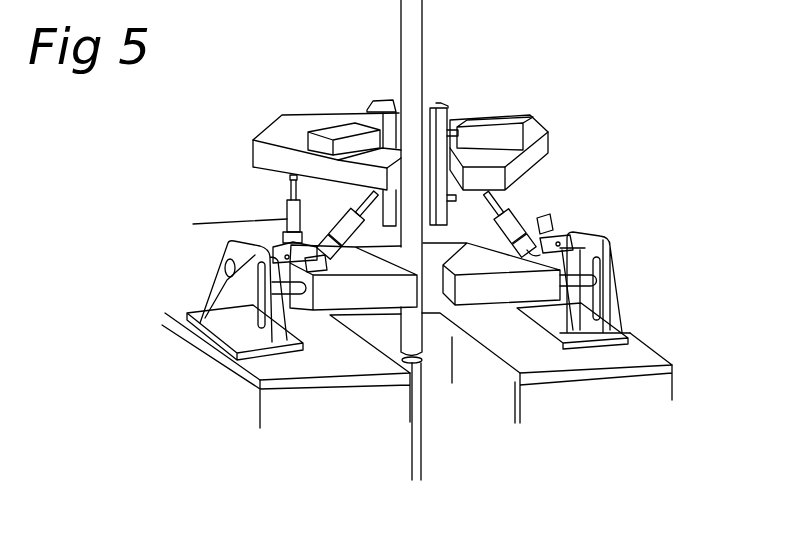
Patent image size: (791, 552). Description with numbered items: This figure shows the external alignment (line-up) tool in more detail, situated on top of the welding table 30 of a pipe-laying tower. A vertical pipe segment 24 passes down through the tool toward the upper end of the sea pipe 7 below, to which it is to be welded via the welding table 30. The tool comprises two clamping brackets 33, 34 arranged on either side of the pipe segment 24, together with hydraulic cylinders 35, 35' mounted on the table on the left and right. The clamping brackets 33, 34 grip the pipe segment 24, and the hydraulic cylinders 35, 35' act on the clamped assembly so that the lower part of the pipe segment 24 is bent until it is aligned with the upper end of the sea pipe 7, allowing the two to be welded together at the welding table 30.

The sea pipe 7 is at (413, 372).
The pipe segment 24 is at (412, 52).
The welding table 30 is at (648, 390).
The clamping bracket 33 is at (474, 112).
The clamping bracket 34 is at (367, 110).
The hydraulic cylinder 35 is at (552, 211).
The hydraulic cylinder 35' is at (285, 218).